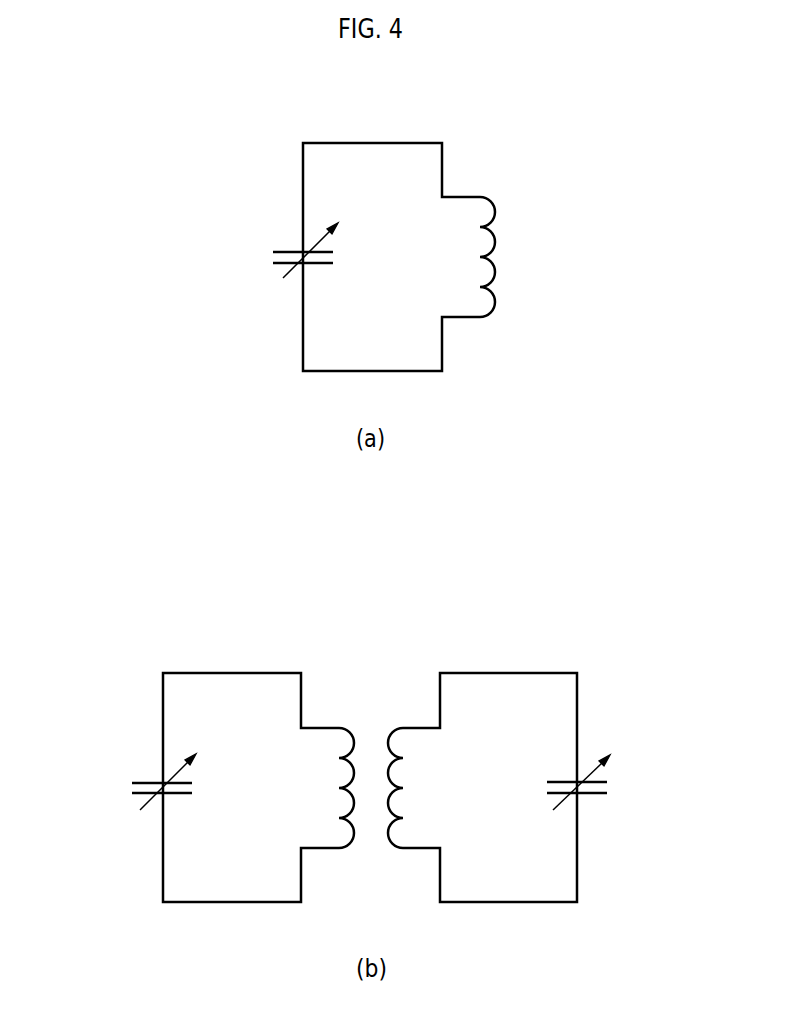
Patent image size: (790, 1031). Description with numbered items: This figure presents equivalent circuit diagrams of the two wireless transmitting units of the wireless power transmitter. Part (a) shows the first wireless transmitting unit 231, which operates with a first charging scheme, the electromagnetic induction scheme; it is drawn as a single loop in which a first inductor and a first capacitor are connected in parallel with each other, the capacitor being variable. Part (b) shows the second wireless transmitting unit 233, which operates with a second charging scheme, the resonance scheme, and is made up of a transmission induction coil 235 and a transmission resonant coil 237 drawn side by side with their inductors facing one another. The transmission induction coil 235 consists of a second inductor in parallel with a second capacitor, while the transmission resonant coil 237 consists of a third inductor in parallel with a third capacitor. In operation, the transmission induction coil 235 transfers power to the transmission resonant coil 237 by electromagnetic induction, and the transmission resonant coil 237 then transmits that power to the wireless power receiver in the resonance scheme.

The first wireless transmitting unit 231 is at (373, 142).
The second wireless transmitting unit 233 is at (546, 594).
The transmission induction coil 235 is at (233, 672).
The transmission resonant coil 237 is at (497, 672).